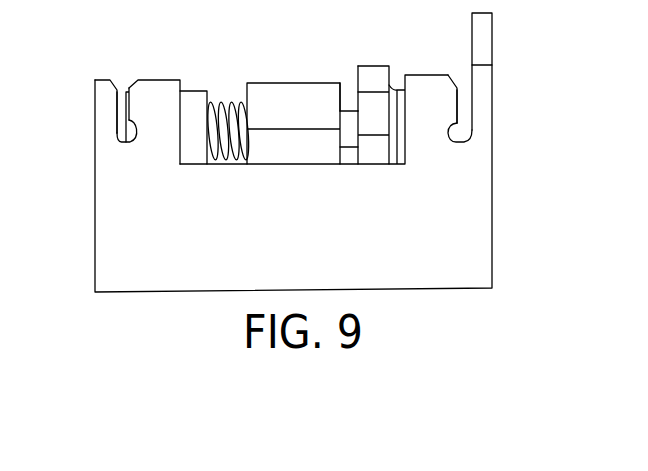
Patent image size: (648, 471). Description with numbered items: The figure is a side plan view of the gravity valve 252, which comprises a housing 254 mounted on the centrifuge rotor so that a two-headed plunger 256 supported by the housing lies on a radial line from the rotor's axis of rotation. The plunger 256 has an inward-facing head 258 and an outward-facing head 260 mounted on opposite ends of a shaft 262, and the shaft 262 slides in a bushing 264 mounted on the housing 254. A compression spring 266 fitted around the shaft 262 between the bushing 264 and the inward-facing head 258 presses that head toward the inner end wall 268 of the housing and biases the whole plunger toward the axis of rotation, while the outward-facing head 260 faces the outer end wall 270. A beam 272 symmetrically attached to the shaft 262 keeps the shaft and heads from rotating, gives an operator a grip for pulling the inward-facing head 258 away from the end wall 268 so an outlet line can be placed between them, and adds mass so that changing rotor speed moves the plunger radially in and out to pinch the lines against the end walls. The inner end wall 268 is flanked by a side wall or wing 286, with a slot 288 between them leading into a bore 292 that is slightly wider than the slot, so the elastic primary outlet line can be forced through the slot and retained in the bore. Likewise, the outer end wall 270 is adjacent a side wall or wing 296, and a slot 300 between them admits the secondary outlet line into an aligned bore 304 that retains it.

The gravity valve 252 is at (341, 152).
The housing 254 is at (478, 213).
The two-headed plunger 256 is at (352, 89).
The inward-facing head 258 is at (193, 90).
The outward-facing head 260 is at (398, 88).
The shaft 262 is at (343, 148).
The bushing 264 is at (307, 82).
The compression spring 266 is at (232, 102).
The inner end wall 268 is at (95, 88).
The outer end wall 270 is at (493, 32).
The beam 272 is at (385, 67).
The side wall or wing 286 is at (150, 79).
The slot 288 is at (122, 107).
The bore 292 is at (120, 143).
The side wall or wing 296 is at (443, 105).
The slot 300 is at (465, 85).
The bore 304 is at (472, 132).